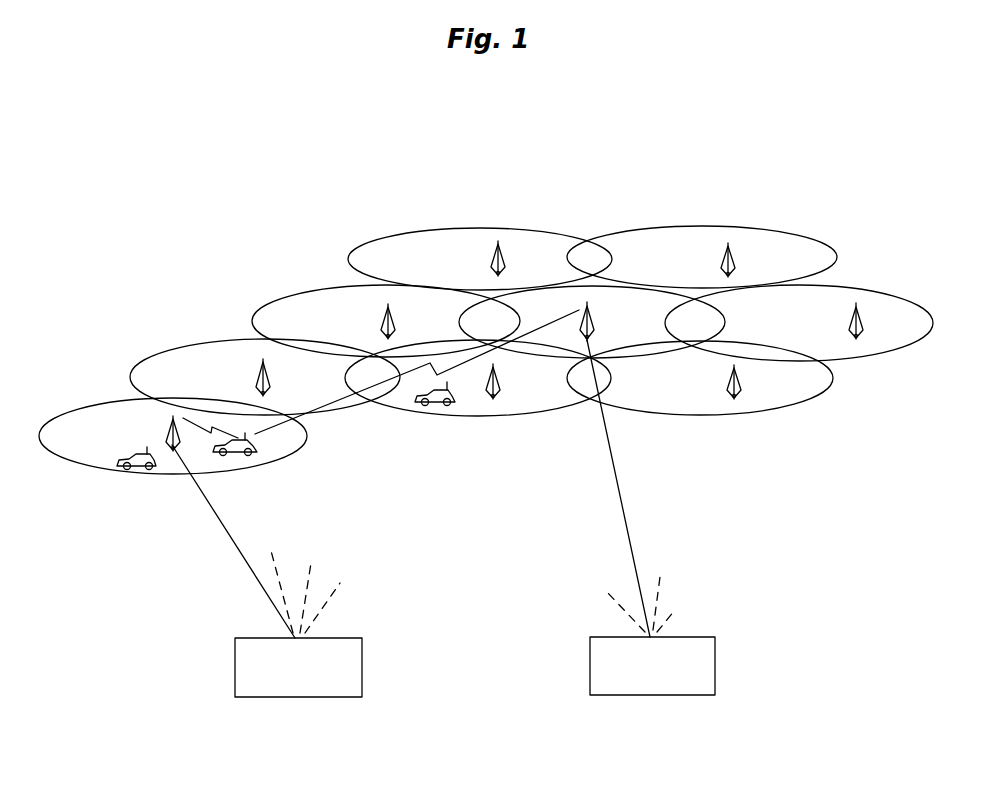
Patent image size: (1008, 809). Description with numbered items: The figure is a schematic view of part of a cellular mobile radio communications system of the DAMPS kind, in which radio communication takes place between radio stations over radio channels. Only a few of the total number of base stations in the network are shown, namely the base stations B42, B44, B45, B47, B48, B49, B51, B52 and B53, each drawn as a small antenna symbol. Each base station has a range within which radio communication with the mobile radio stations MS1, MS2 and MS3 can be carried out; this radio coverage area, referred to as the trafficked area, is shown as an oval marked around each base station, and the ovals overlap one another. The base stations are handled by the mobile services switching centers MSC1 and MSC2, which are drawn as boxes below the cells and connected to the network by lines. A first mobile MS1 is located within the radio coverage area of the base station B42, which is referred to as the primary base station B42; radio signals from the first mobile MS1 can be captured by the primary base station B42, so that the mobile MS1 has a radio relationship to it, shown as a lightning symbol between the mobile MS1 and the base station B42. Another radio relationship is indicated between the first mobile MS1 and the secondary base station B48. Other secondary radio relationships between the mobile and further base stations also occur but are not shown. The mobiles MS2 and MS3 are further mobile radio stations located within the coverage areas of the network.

The primary base station B42 is at (165, 435).
The base station B44 is at (380, 320).
The base station B45 is at (255, 378).
The base station B47 is at (490, 262).
The secondary base station B48 is at (594, 320).
The base station B49 is at (532, 386).
The base station B51 is at (722, 263).
The base station B52 is at (850, 325).
The base station B53 is at (728, 387).
The first mobile radio station MS1 is at (255, 446).
The mobile radio station MS2 is at (133, 470).
The mobile radio station MS3 is at (432, 404).
The mobile services switching center MSC1 is at (267, 571).
The mobile services switching center MSC2 is at (651, 517).